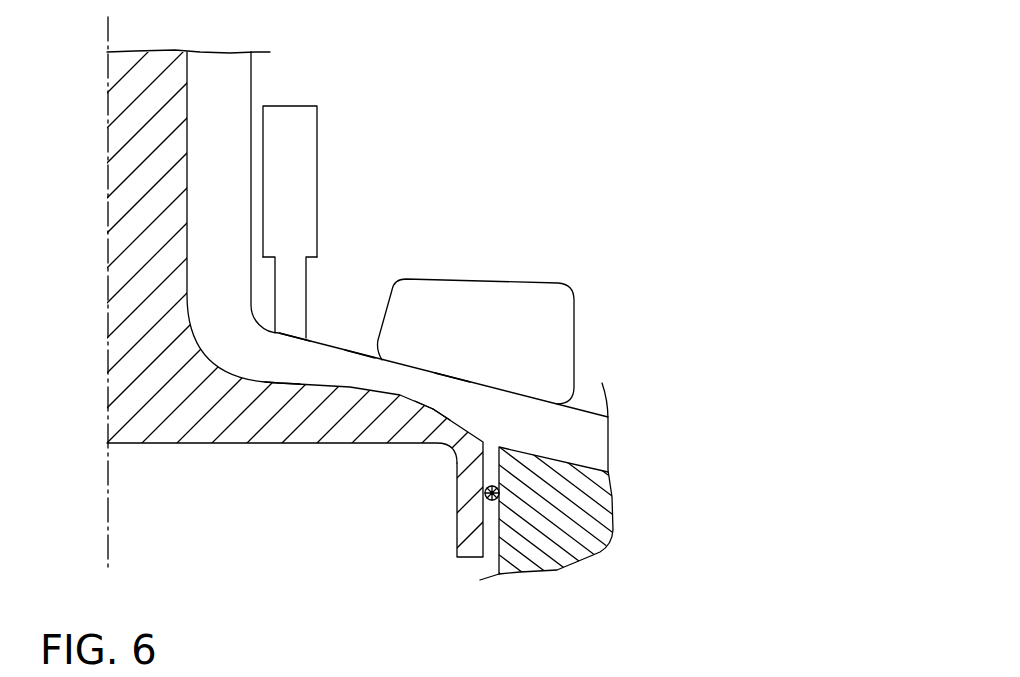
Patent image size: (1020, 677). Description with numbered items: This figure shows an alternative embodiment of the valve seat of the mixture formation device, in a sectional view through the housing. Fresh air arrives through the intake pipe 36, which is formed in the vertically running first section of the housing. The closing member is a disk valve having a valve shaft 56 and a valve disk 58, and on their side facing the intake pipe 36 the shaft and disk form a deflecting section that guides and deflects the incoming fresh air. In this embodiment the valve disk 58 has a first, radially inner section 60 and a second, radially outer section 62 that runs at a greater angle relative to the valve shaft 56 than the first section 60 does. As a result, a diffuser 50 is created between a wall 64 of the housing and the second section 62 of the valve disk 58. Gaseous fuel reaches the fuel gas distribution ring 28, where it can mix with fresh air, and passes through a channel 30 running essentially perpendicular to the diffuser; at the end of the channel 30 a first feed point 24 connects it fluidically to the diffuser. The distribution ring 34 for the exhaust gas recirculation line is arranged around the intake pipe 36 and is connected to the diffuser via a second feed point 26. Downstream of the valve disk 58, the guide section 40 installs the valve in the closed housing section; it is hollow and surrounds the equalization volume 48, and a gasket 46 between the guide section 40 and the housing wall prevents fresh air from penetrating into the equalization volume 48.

The first feed point 24 is at (294, 337).
The second feed point 26 is at (452, 377).
The fuel gas distribution ring 28 is at (300, 155).
The channel 30 is at (294, 291).
The distribution ring for the exhaust gas recirculation line 34 is at (563, 322).
The intake pipe 36 is at (250, 71).
The guide section 40 is at (468, 532).
The gasket 46 is at (492, 493).
The equalization volume 48 is at (266, 529).
The diffuser 50 is at (477, 413).
The valve shaft 56 is at (166, 119).
The valve disk 58 is at (189, 422).
The first, radially inner section 60 is at (279, 383).
The second, radially outer section 62 is at (433, 409).
The wall 64 is at (359, 354).